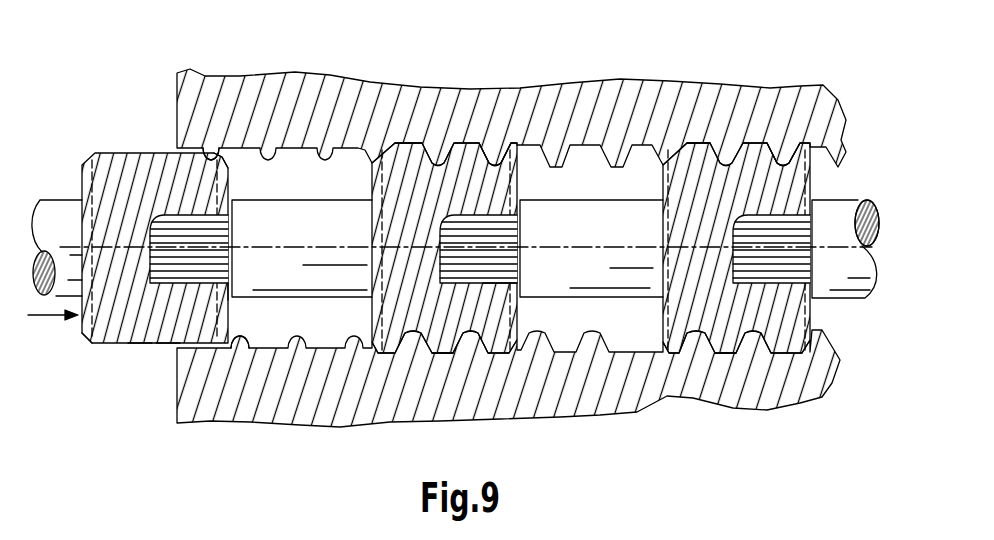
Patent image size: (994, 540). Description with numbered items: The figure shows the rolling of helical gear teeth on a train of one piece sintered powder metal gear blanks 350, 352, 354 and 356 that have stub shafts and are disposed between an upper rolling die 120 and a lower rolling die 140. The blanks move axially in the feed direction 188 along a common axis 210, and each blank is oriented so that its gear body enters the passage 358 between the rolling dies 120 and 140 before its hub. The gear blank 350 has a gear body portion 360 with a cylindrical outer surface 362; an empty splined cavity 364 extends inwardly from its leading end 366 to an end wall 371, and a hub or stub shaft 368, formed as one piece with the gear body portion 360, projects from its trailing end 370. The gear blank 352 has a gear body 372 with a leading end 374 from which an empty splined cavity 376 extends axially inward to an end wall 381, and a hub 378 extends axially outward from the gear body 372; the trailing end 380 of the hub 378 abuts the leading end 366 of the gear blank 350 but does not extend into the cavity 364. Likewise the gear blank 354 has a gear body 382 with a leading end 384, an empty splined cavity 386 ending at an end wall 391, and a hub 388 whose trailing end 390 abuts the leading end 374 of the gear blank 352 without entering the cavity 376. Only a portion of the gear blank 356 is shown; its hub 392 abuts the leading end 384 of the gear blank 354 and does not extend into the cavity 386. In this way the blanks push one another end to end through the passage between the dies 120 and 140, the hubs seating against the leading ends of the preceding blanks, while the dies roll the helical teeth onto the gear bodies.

The upper rolling die 120 is at (850, 102).
The lower rolling die 140 is at (832, 388).
The feed direction 188 is at (30, 317).
The axis 210 is at (603, 243).
The gear blank 350 is at (99, 152).
The gear blank 352 is at (482, 138).
The gear blank 354 is at (763, 138).
The gear blank 356 is at (875, 200).
The passage 358 is at (263, 333).
The gear body portion 360 is at (167, 345).
The cylindrical outer surface 362 is at (140, 345).
The splined cavity 364 is at (205, 150).
The leading end 366 is at (233, 170).
The hub 368 is at (62, 198).
The trailing end 370 is at (83, 328).
The end wall 371 is at (163, 215).
The gear body 372 is at (432, 152).
The leading end 374 is at (523, 172).
The splined cavity 376 is at (433, 336).
The hub 378 is at (273, 297).
The trailing end 380 is at (218, 298).
The end wall 381 is at (443, 220).
The gear body 382 is at (708, 165).
The leading end 384 is at (812, 167).
The splined cavity 386 is at (753, 285).
The hub 388 is at (567, 297).
The trailing end 390 is at (500, 290).
The end wall 391 is at (737, 218).
The hub 392 is at (862, 300).